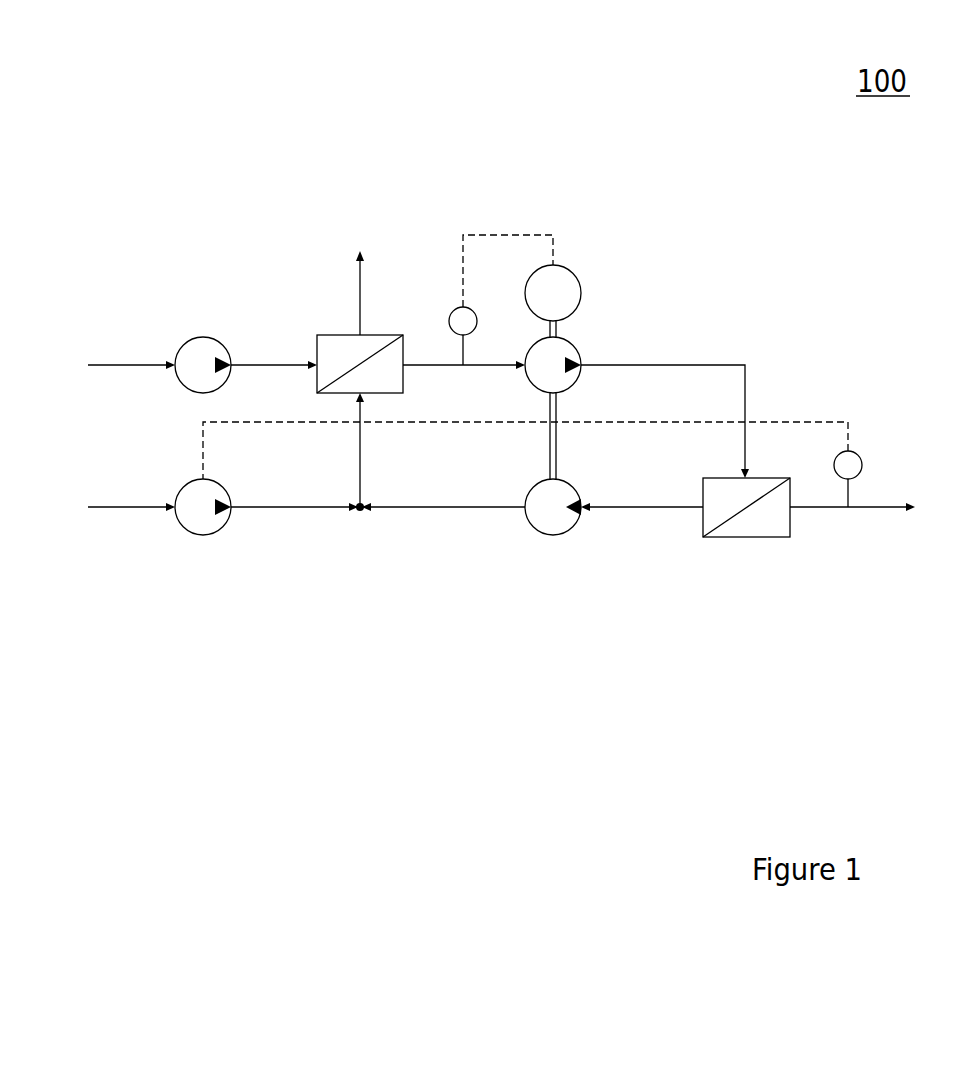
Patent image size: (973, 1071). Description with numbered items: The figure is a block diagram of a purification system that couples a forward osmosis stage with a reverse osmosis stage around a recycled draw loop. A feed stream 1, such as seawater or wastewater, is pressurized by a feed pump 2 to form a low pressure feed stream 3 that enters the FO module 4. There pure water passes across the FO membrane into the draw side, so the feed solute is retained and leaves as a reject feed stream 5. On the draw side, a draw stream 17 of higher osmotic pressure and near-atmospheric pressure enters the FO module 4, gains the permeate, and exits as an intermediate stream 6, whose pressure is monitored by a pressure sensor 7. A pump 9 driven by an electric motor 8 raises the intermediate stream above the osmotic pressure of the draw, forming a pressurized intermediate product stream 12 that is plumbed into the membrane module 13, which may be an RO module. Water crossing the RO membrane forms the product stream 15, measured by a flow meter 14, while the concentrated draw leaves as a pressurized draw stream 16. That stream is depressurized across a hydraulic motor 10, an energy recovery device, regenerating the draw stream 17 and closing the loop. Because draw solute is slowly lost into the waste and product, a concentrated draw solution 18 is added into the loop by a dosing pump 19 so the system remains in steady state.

The feed stream 1 is at (112, 364).
The feed pump 2 is at (199, 337).
The low pressure feed stream 3 is at (263, 364).
The FO module 4 is at (317, 393).
The reject feed stream 5 is at (360, 267).
The intermediate stream 6 is at (425, 364).
The pressure sensor 7 is at (451, 313).
The electric motor 8 is at (578, 282).
The pump 9 is at (580, 345).
The hydraulic motor 10 is at (533, 532).
The pressurized intermediate product stream 12 is at (680, 364).
The membrane module 13 is at (790, 537).
The flow meter 14 is at (860, 452).
The product stream 15 is at (885, 508).
The pressurized draw stream 16 is at (645, 508).
The draw stream 17 is at (361, 488).
The concentrated draw solution 18 is at (122, 508).
The dosing pump 19 is at (223, 533).